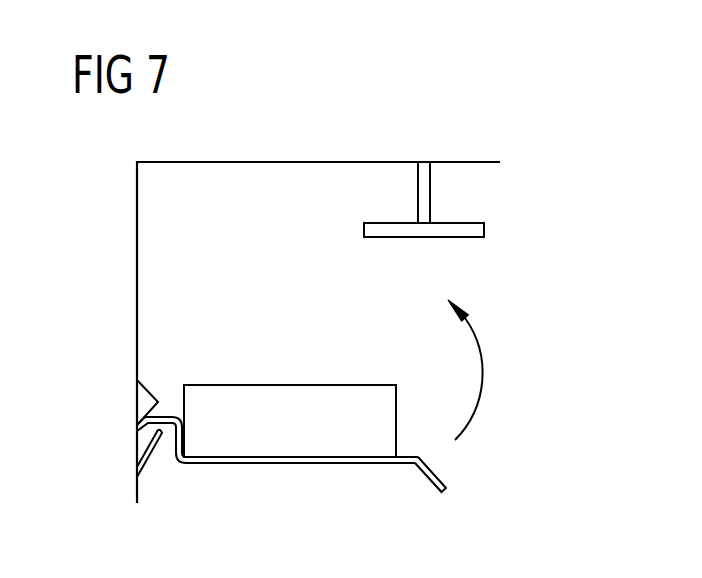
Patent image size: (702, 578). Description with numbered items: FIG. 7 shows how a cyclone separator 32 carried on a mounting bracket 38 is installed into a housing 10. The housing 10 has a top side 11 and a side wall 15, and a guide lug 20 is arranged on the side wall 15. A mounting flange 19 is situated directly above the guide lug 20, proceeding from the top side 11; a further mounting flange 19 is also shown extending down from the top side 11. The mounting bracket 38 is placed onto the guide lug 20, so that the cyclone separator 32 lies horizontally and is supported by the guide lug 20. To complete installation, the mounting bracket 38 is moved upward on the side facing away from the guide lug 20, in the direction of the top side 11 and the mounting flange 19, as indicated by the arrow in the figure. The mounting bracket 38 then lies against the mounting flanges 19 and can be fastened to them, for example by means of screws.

The housing 10 is at (137, 200).
The top side 11 is at (344, 160).
The side wall 15 is at (137, 328).
The mounting flange 19 is at (476, 232).
The guide lug 20 is at (143, 452).
The cyclone separator 32 is at (315, 385).
The mounting bracket 38 is at (440, 473).